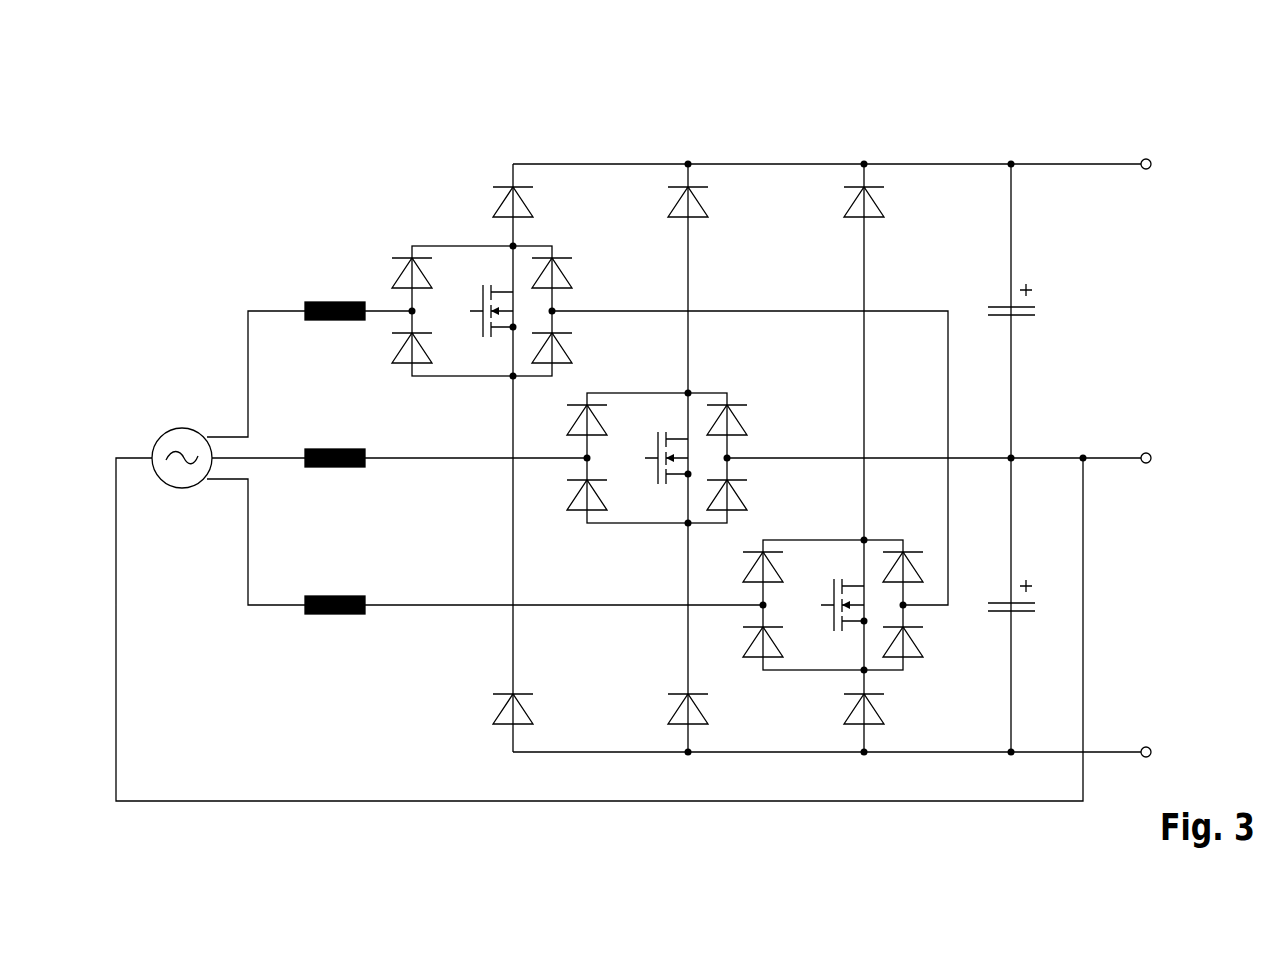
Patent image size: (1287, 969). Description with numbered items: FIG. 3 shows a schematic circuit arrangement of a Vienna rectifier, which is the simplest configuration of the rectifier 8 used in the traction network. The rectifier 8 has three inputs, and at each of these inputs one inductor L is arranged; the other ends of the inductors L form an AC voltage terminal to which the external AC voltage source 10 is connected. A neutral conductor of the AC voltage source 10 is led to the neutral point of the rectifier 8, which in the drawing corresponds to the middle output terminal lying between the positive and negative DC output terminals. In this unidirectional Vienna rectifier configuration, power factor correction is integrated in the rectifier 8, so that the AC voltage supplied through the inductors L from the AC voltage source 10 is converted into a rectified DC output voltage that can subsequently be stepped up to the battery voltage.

The rectifier 8 is at (800, 124).
The AC voltage source 10 is at (180, 428).
The inductor L is at (336, 300).